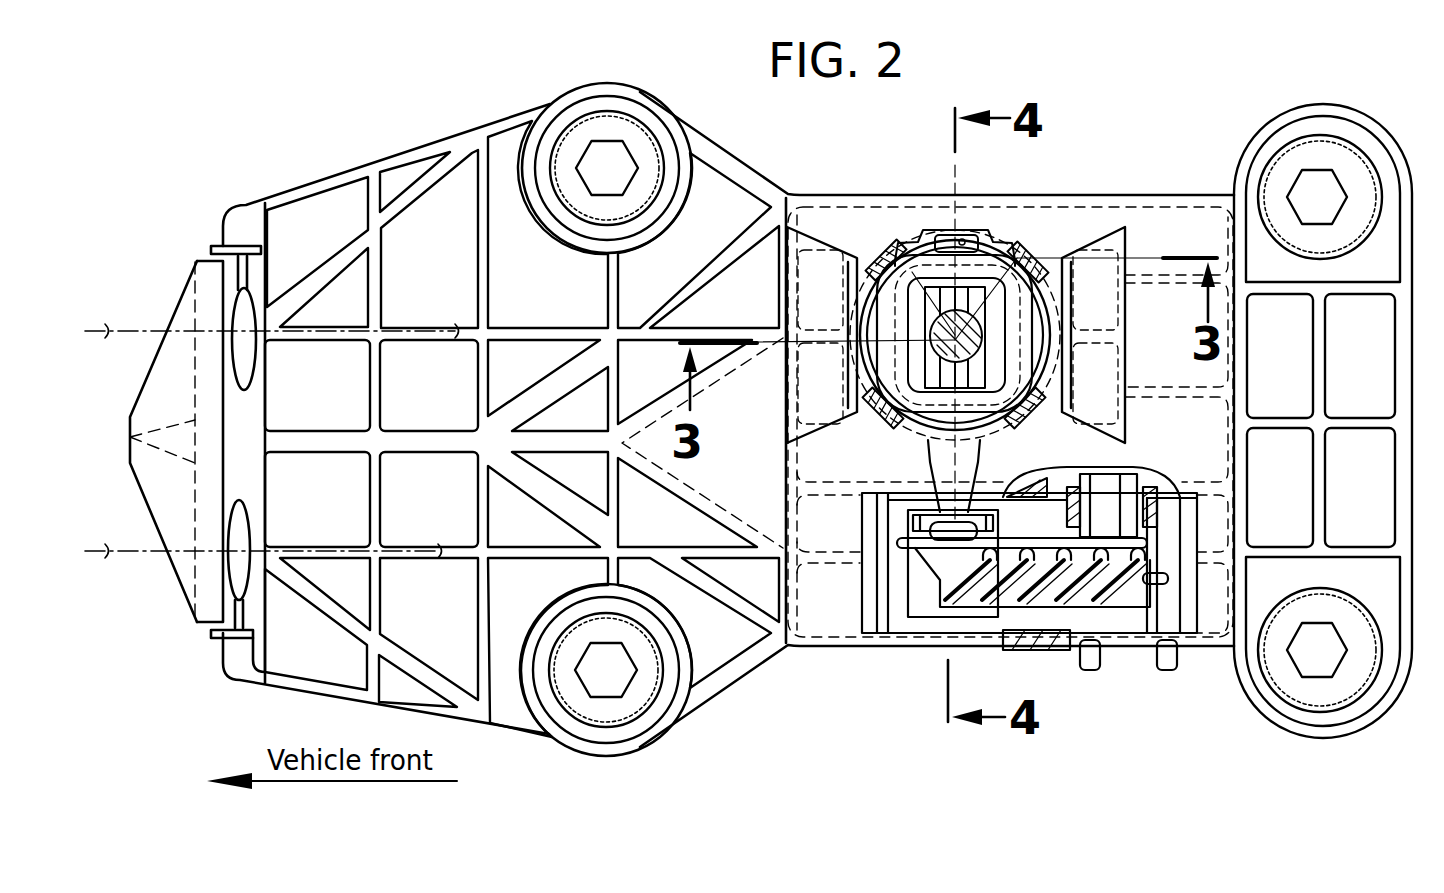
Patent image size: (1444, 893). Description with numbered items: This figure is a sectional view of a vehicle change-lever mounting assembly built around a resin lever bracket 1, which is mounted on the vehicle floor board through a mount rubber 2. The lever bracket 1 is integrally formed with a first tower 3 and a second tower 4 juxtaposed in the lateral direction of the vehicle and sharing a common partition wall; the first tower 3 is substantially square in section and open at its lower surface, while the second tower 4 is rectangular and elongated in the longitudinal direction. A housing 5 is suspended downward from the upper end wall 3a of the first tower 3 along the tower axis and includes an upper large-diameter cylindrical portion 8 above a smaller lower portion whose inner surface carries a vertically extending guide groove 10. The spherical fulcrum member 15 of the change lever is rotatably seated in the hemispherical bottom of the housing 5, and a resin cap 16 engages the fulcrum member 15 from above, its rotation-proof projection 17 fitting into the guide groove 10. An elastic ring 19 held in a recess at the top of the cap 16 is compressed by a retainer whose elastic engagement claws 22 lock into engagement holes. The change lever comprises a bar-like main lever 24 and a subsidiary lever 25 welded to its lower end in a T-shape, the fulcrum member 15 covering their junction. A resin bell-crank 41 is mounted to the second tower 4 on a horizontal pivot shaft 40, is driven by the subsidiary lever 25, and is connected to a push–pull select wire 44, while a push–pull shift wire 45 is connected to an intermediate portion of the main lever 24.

The lever bracket 1 is at (340, 165).
The mount rubber 2 is at (647, 125).
The first tower 3 is at (1053, 193).
The upper end wall 3a is at (1087, 223).
The second tower 4 is at (910, 645).
The housing 5 is at (905, 437).
The large-diameter cylindrical portion 8 is at (1032, 312).
The guide groove 10 is at (972, 236).
The fulcrum member 15 is at (868, 367).
The cap 16 is at (905, 247).
The rotation-proof projection 17 is at (940, 236).
The elastic ring 19 is at (850, 300).
The elastic engagement claws 22 is at (1040, 430).
The main lever 24 is at (897, 267).
The subsidiary lever 25 is at (975, 461).
The horizontal pivot shaft 40 is at (1137, 488).
The bell-crank 41 is at (908, 598).
The push–pull select wire 44 is at (108, 554).
The push–pull shift wire 45 is at (112, 328).